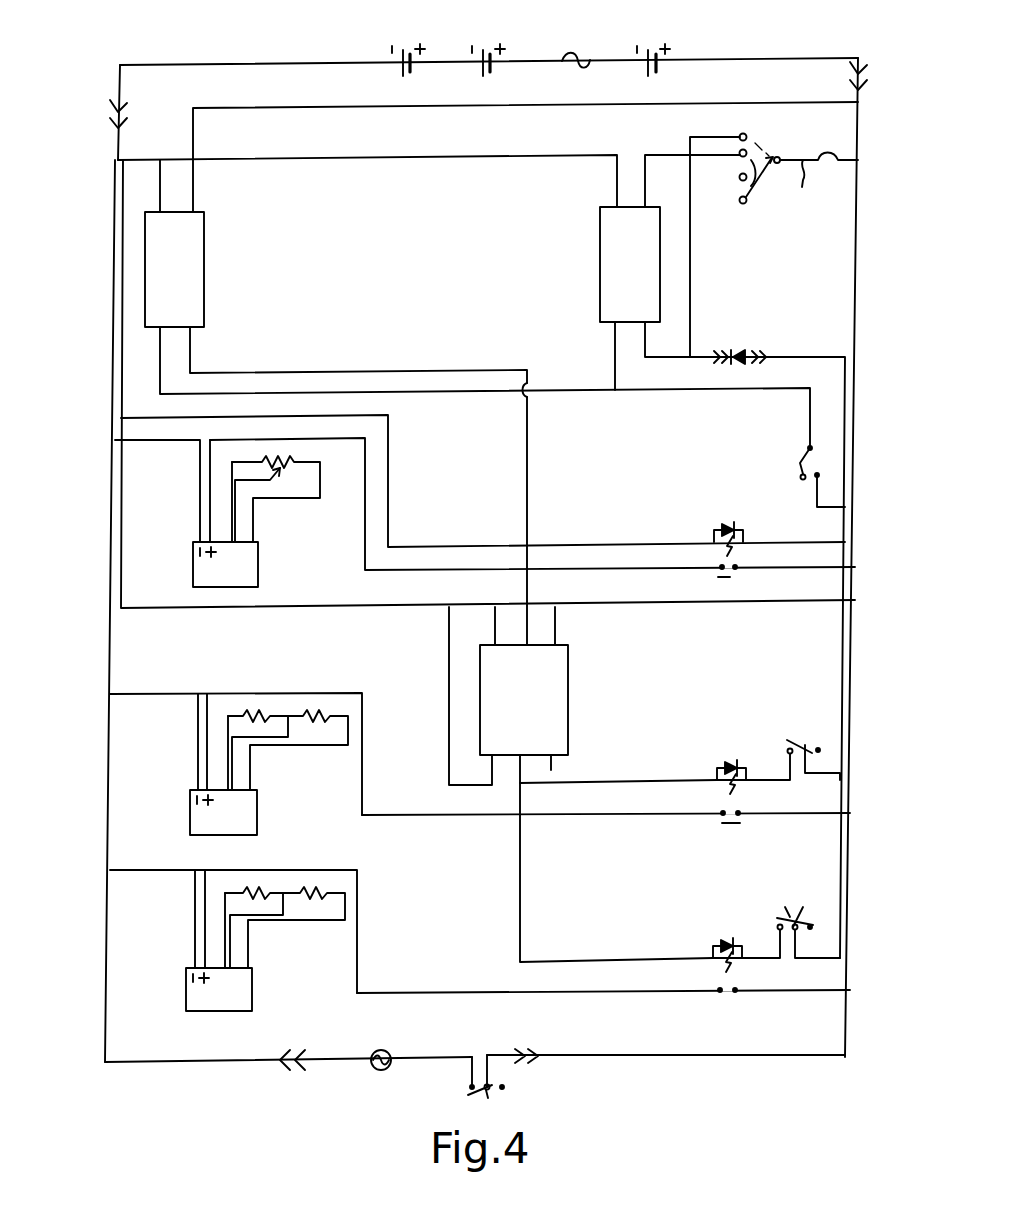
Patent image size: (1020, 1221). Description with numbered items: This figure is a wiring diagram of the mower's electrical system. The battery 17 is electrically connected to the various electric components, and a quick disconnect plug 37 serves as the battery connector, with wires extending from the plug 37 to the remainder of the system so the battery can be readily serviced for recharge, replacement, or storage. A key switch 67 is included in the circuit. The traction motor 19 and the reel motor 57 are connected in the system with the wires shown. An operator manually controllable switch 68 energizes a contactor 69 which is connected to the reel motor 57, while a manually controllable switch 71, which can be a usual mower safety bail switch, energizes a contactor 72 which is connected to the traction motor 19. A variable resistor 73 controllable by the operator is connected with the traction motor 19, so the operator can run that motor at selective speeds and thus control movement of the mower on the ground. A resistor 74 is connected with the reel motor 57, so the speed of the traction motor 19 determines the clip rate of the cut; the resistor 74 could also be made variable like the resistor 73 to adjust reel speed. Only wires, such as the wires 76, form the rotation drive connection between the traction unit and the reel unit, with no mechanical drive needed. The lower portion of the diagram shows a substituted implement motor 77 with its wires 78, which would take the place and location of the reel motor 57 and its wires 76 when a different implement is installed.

The battery 17 is at (437, 50).
The traction motor 19 is at (256, 568).
The quick disconnect plug 37 is at (110, 118).
The reel motor 57 is at (246, 823).
The key switch 67 is at (766, 180).
The manually controllable switch 68 is at (822, 729).
The contactor 69 is at (712, 822).
The manually controllable switch 71 is at (798, 452).
The contactor 72 is at (744, 578).
The variable resistor 73 is at (352, 452).
The resistor 74 is at (314, 710).
The wires 76 is at (232, 693).
The implement motor 77 is at (218, 1012).
The wires 78 is at (215, 868).